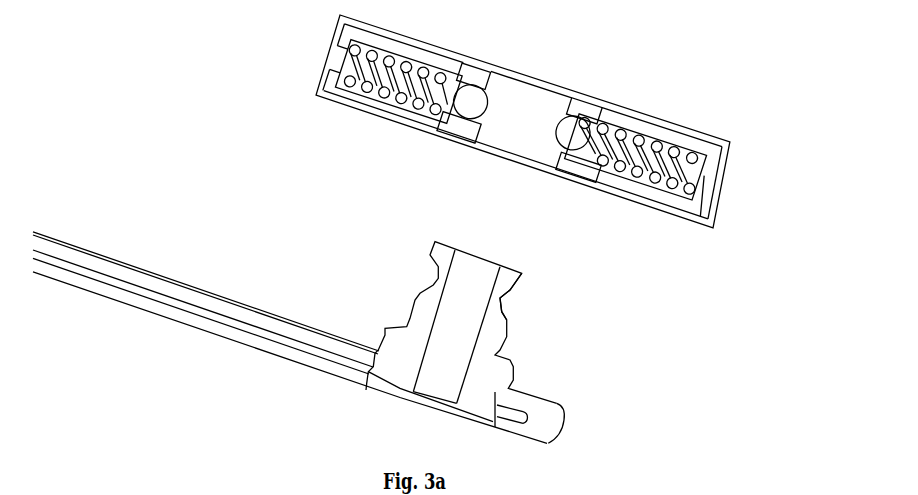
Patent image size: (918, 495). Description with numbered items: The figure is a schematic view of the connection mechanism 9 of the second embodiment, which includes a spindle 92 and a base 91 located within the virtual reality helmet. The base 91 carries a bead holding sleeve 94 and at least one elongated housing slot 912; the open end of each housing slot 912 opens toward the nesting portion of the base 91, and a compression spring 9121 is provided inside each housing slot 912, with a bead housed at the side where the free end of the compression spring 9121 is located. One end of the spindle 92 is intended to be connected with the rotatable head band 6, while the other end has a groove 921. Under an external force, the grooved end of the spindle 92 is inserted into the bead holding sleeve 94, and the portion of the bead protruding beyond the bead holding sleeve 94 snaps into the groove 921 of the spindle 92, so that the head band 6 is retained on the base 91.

The connection mechanism 9 is at (243, 111).
The base 91 is at (630, 103).
The bead holding sleeve 94 is at (597, 97).
The housing slot 912 is at (703, 186).
The compression spring 9121 is at (688, 140).
The rotatable head band 6 is at (155, 276).
The spindle 92 is at (500, 356).
The groove 921 is at (505, 300).